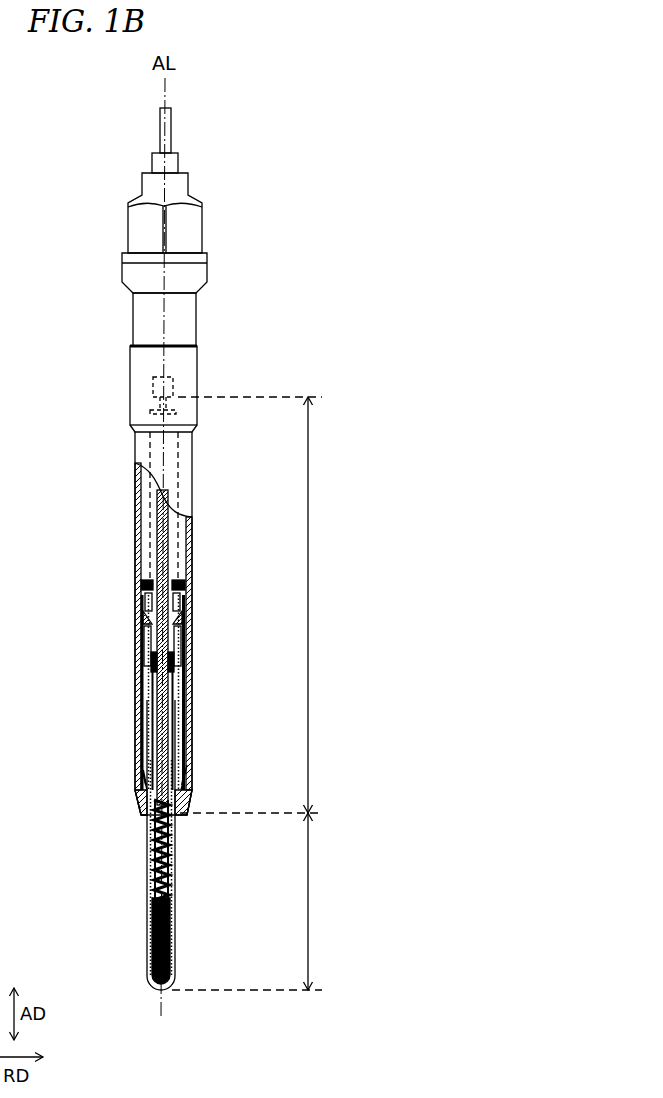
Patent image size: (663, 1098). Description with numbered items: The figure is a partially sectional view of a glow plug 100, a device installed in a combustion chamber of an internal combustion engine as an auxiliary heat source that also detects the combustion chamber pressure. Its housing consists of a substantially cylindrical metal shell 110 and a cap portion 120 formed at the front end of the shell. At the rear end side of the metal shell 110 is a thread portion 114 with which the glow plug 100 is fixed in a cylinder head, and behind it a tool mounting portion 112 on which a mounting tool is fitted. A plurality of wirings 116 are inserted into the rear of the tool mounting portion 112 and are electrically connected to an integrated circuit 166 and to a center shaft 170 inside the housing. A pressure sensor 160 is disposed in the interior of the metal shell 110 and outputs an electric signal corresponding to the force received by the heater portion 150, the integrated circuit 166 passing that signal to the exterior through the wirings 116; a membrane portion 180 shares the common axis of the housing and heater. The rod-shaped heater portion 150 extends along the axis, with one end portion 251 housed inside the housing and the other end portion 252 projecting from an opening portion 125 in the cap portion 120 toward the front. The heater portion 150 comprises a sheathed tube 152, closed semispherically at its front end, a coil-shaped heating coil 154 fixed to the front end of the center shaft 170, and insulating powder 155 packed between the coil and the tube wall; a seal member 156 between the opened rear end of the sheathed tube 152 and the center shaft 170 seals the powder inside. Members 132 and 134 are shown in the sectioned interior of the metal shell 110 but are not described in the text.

The glow plug 100 is at (209, 140).
The metal shell 110 is at (135, 436).
The tool mounting portion 112 is at (147, 232).
The thread portion 114 is at (147, 385).
The wirings 116 is at (161, 130).
The cap portion 120 is at (140, 800).
The opening portion 125 is at (143, 822).
The insulating member 132 is at (134, 602).
The insulating member 134 is at (134, 642).
The heater portion 150 is at (150, 912).
The sheathed tube 152 is at (174, 898).
The heating coil 154 is at (171, 935).
The insulating powder 155 is at (168, 868).
The seal member 156 is at (188, 656).
The pressure sensor 160 is at (188, 570).
The integrated circuit 166 is at (176, 386).
The center shaft 170 is at (150, 510).
The membrane portion 180 is at (190, 779).
The one end portion 251 is at (352, 605).
The other end portion 252 is at (362, 901).